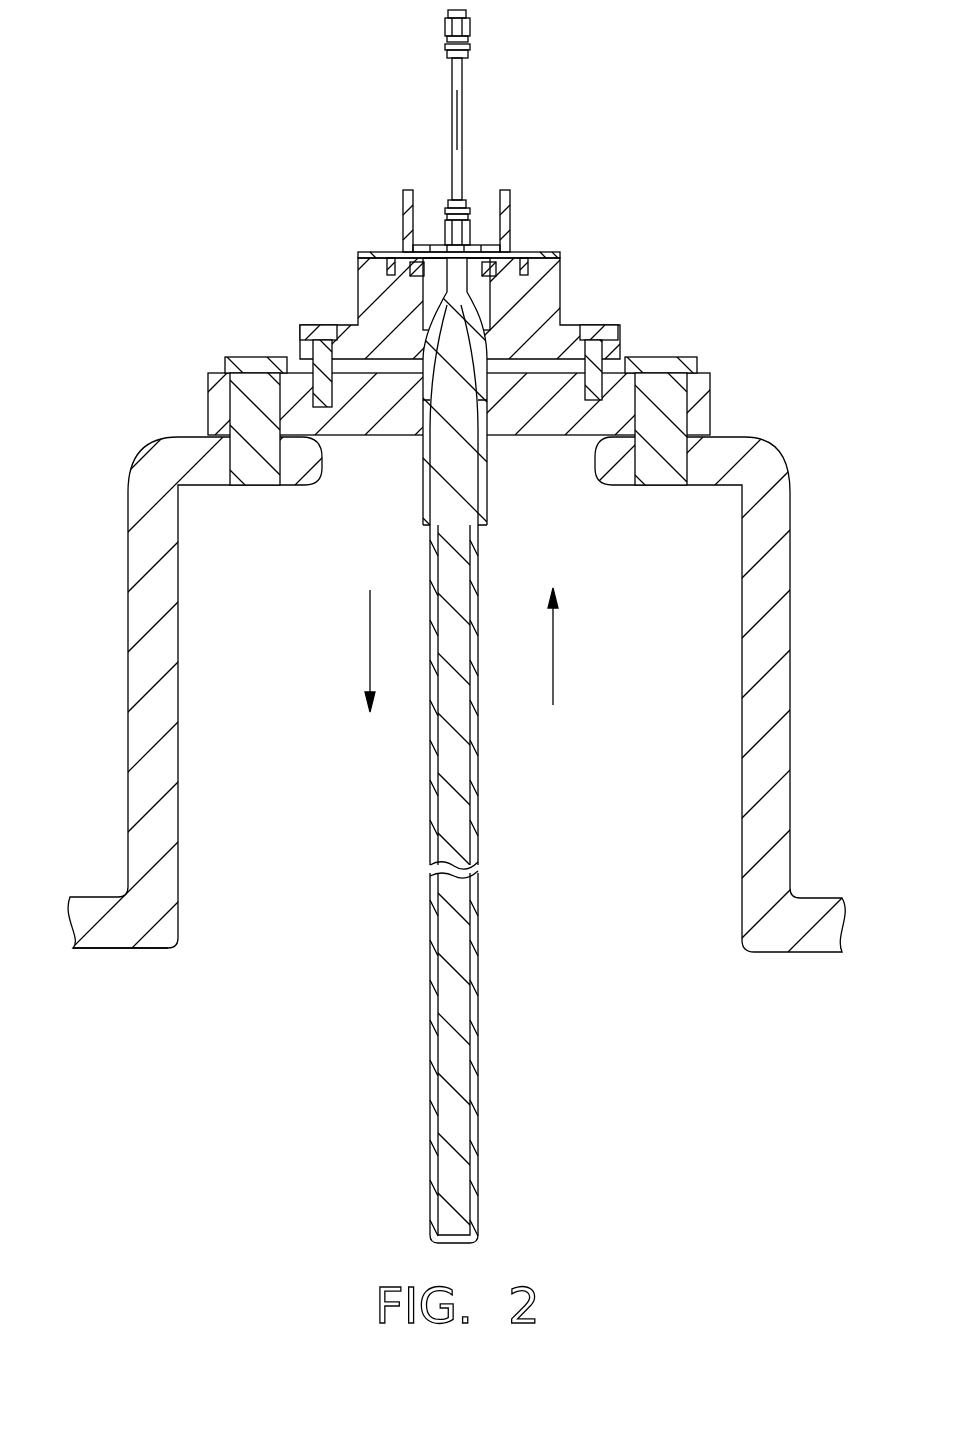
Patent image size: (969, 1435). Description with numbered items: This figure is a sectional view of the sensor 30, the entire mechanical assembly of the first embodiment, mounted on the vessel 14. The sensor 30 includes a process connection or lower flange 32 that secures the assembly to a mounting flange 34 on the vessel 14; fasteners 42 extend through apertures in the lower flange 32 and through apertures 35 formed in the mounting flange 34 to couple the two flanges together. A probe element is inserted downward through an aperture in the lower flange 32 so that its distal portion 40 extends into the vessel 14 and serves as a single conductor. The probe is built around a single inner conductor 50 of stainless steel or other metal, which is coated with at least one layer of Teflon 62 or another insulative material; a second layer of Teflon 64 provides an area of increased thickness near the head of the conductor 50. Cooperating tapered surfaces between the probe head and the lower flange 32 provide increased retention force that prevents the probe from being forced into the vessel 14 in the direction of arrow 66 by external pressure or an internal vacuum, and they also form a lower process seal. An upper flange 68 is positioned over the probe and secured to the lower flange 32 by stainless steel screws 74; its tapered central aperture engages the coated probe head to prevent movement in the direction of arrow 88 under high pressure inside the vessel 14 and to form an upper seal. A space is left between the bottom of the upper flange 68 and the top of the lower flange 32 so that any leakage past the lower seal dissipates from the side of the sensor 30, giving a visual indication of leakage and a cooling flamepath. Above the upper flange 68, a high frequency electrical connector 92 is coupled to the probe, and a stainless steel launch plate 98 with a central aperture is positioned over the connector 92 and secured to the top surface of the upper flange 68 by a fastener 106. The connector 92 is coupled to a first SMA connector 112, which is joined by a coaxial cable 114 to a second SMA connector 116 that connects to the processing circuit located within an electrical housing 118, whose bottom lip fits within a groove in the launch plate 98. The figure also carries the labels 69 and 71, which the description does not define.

The vessel 14 is at (90, 948).
The sensor 30 is at (463, 211).
The lower flange 32 is at (456, 422).
The mounting flange 34 is at (790, 562).
The apertures 35 is at (247, 470).
The distal portion 40 is at (480, 750).
The fasteners 42 is at (257, 393).
The inner conductor 50 is at (452, 963).
The layer of Teflon 62 is at (428, 1068).
The second layer of Teflon 64 is at (423, 495).
The arrow 66 is at (370, 637).
The upper flange 68 is at (540, 303).
The passage 69 is at (541, 387).
The bolt 71 is at (283, 365).
The stainless steel screws 74 is at (603, 327).
The arrow 88 is at (553, 655).
The high frequency electrical connector 92 is at (432, 250).
The launch plate 98 is at (545, 256).
The fastener 106 is at (523, 258).
The first SMA connector 112 is at (445, 210).
The coaxial cable 114 is at (460, 115).
The second SMA connector 116 is at (470, 24).
The electrical housing 118 is at (512, 197).